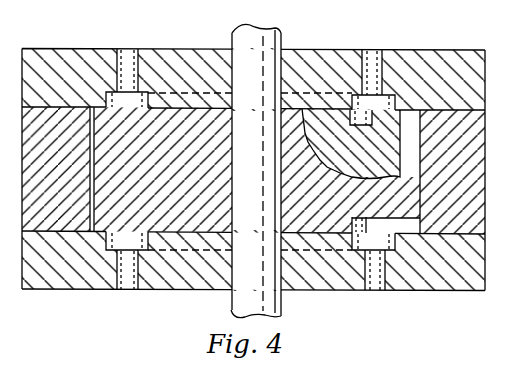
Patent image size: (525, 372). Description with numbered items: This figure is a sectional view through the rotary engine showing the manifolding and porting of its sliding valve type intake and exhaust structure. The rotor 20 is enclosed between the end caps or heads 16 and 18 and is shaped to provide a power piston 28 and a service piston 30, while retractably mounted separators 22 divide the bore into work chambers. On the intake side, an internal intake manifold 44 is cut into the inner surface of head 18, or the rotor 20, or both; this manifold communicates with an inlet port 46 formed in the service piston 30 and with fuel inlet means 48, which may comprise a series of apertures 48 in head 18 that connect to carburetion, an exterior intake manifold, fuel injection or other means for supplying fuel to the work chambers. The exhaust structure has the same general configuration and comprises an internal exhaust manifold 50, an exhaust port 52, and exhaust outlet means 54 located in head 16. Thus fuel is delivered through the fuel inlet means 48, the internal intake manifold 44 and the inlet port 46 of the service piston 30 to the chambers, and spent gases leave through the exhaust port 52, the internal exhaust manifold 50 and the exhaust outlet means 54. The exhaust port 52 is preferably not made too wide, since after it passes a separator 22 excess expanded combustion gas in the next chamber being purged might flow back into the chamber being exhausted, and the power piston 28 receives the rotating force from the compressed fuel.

The head 16 is at (52, 54).
The exhaust outlet means 54 is at (123, 50).
The rotor 20 is at (183, 108).
The internal exhaust manifold 50 is at (360, 48).
The exhaust port 52 is at (368, 120).
The separators 22 is at (396, 110).
The service piston 30 is at (408, 208).
The inlet port 46 is at (420, 224).
The power piston 28 is at (88, 215).
The head 18 is at (88, 291).
The fuel inlet means 48 is at (135, 270).
The internal intake manifold 44 is at (355, 238).